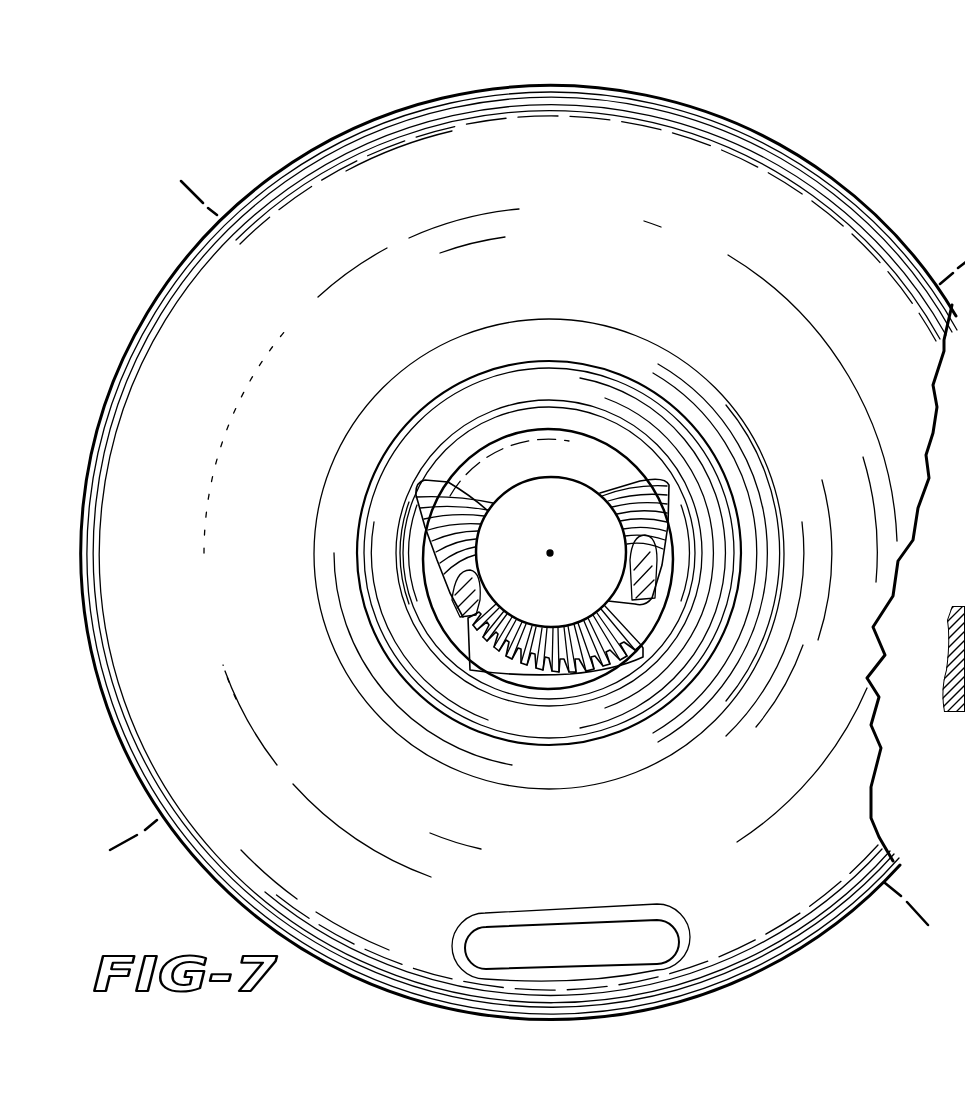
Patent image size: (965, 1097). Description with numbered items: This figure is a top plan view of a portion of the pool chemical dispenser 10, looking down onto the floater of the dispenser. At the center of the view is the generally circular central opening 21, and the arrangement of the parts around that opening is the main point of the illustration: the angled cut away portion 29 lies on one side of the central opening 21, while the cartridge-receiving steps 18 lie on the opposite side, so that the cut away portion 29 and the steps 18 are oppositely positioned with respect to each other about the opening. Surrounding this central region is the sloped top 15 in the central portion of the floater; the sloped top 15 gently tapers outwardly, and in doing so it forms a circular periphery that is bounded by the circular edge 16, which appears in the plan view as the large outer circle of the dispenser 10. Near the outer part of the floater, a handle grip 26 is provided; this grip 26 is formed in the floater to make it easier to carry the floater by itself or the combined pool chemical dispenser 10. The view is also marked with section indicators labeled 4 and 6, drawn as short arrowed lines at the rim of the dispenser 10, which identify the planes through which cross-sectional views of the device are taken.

The pool chemical dispenser 10 is at (843, 187).
The circular edge 16 is at (208, 878).
The sloped top 15 is at (723, 465).
The angled cut away portion 29 is at (588, 437).
The central opening 21 is at (529, 481).
The cartridge-receiving steps 18 is at (585, 623).
The handle grip 26 is at (566, 970).
The section line 4- 4 is at (922, 922).
The section line 6- 6 is at (119, 844).